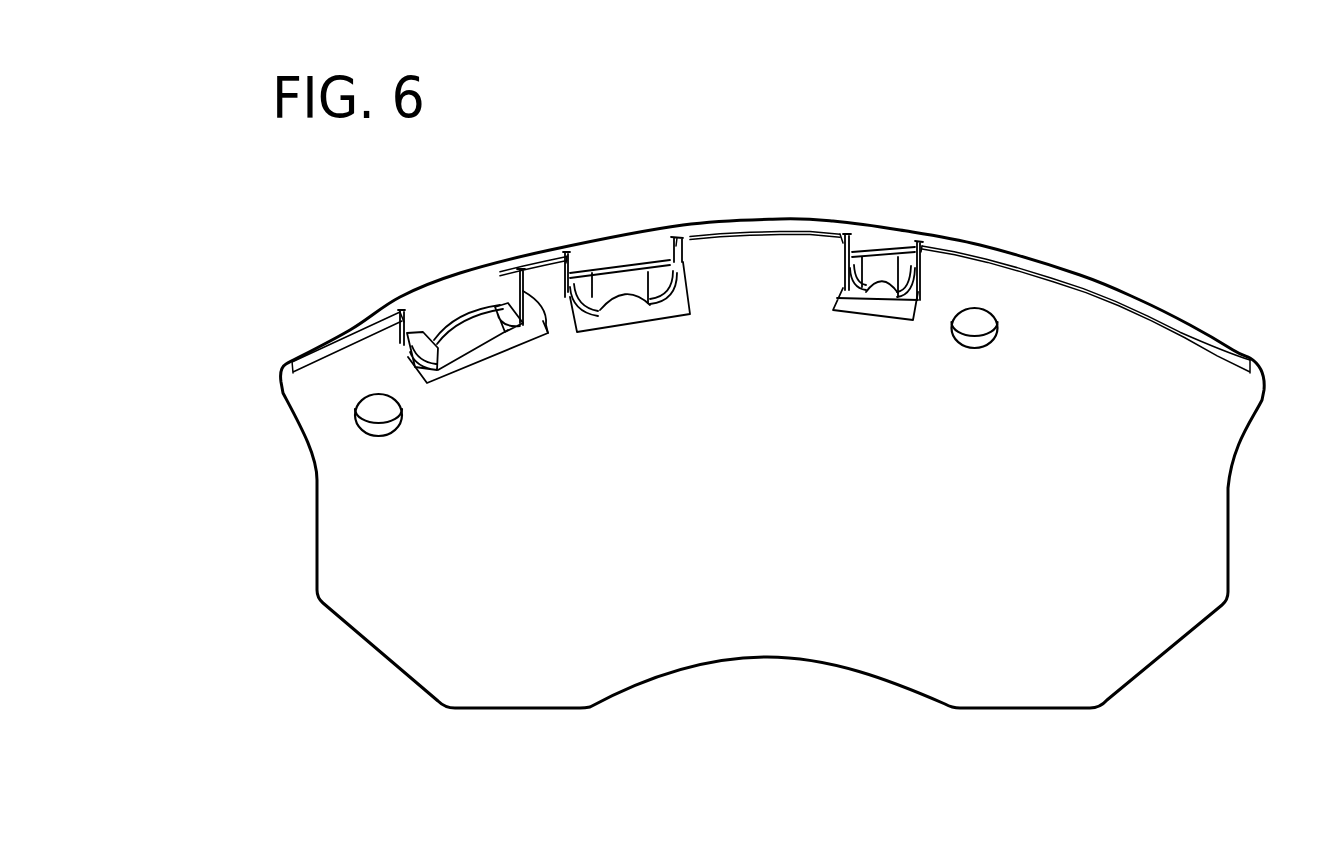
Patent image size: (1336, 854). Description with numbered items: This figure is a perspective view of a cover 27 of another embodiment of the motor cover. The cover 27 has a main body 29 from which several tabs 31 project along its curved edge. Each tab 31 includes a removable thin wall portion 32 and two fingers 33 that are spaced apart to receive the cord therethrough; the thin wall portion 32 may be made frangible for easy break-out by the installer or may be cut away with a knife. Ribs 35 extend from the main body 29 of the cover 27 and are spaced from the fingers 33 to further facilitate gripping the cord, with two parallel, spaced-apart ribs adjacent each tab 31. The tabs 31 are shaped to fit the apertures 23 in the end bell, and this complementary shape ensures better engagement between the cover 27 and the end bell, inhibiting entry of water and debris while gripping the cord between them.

The aperture 23 is at (880, 268).
The cover 27 is at (1130, 292).
The main body 29 is at (804, 511).
The tab 31 is at (647, 247).
The thin wall portion 32 is at (458, 328).
The fingers 33 is at (593, 293).
The ribs 35 is at (920, 315).